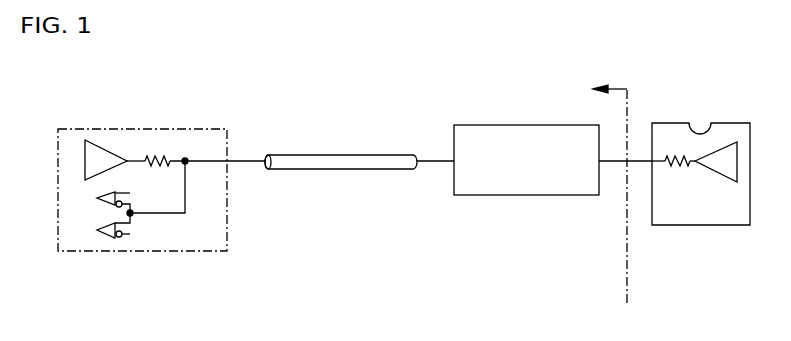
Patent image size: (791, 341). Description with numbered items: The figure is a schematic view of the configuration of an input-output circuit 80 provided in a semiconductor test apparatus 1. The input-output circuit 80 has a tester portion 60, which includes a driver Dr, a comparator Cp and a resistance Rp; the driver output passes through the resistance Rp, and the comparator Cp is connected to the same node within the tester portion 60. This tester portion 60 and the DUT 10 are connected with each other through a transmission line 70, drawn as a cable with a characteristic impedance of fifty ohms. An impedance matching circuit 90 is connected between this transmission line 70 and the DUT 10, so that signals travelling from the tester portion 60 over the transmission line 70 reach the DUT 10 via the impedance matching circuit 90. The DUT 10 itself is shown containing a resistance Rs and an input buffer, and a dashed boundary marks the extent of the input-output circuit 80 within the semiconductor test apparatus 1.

The semiconductor test apparatus 1 is at (705, 43).
The DUT 10 is at (673, 225).
The tester portion 60 is at (113, 251).
The transmission line 70 is at (308, 170).
The input-output circuit 80 is at (627, 306).
The impedance matching circuit 90 is at (525, 195).